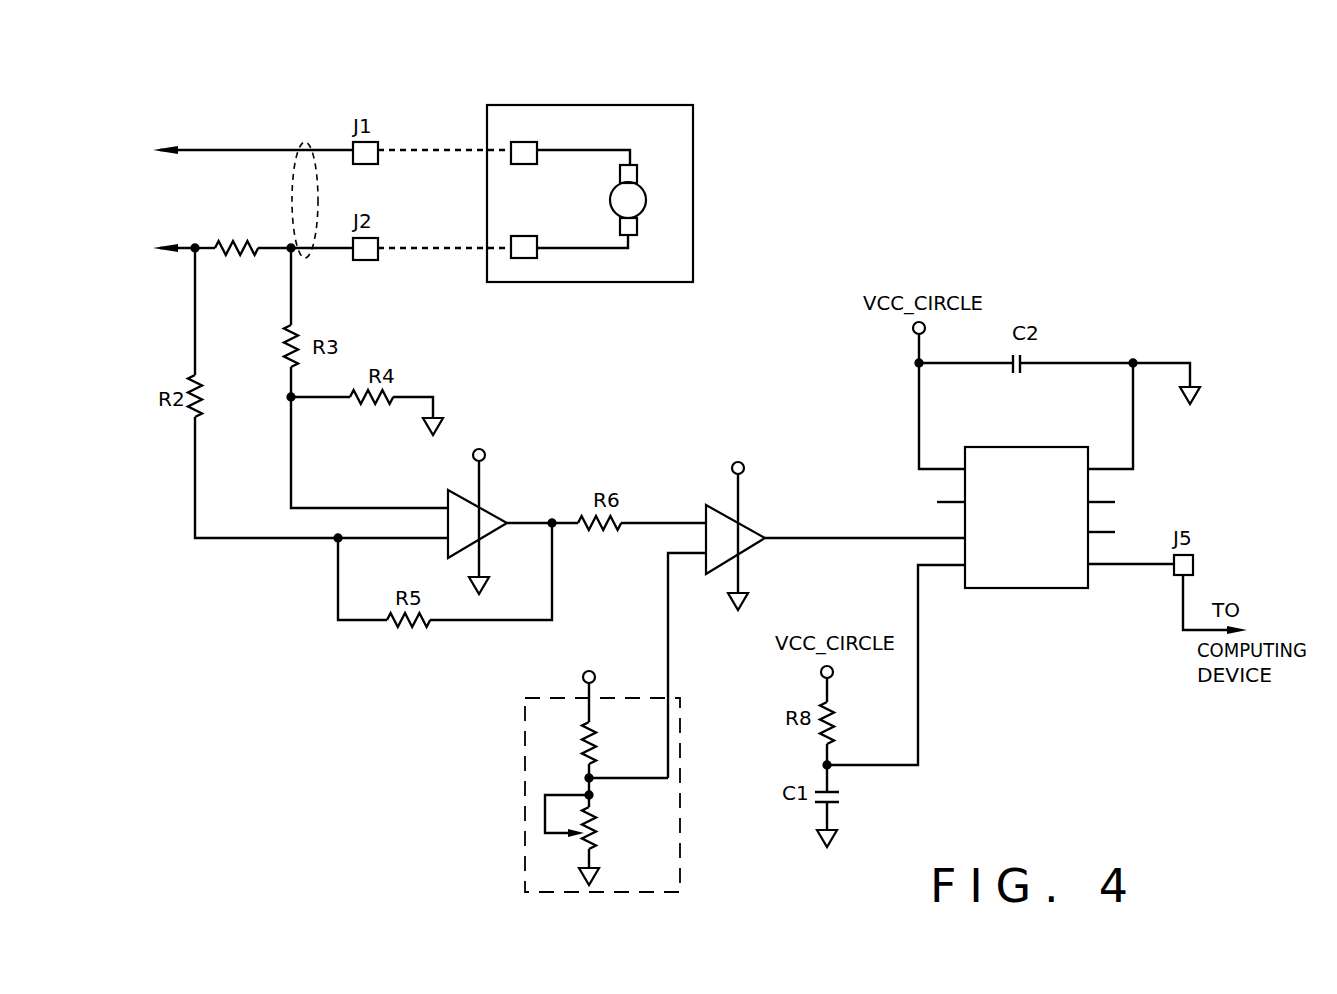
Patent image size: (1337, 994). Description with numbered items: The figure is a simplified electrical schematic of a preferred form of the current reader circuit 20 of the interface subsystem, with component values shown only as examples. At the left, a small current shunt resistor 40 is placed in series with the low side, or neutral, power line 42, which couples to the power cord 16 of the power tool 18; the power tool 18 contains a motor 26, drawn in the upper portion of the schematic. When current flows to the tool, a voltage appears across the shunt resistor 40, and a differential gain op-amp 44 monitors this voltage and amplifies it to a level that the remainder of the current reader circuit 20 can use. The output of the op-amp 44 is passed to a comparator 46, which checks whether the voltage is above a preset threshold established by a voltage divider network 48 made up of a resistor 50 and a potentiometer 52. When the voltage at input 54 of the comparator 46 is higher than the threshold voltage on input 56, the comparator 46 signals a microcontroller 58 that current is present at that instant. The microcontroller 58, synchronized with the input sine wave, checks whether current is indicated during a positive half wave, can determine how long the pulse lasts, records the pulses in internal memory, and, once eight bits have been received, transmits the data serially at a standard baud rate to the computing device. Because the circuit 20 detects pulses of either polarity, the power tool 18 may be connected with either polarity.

The power cord 16 is at (307, 143).
The power tool 18 is at (590, 213).
The current reader circuit 20 is at (770, 327).
The motor 26 is at (635, 203).
The current shunt resistor 40 is at (232, 246).
The low side (neutral) power line 42 is at (188, 256).
The differential gain op-amp 44 is at (476, 508).
The comparator 46 is at (755, 537).
The voltage divider network 48 is at (638, 765).
The resistor 50 is at (583, 748).
The potentiometer 52 is at (627, 791).
The input of the comparator 54 is at (700, 522).
The input of the comparator (threshold input) 56 is at (700, 555).
The microcontroller 58 is at (1017, 588).